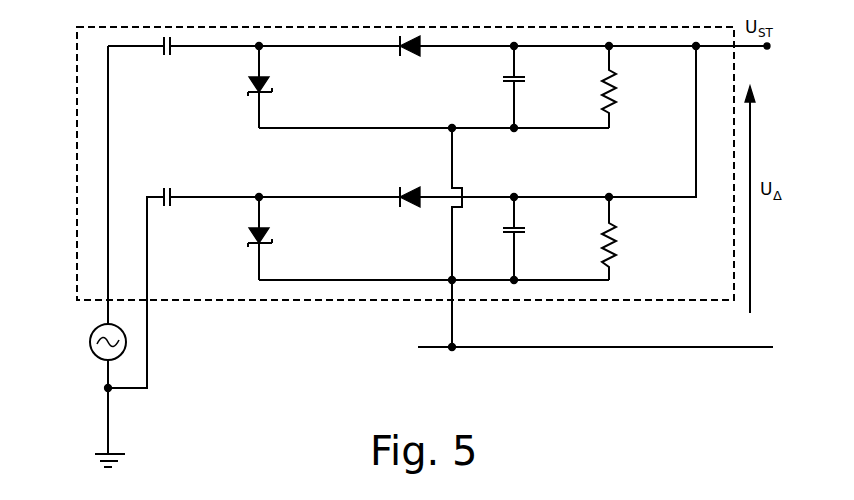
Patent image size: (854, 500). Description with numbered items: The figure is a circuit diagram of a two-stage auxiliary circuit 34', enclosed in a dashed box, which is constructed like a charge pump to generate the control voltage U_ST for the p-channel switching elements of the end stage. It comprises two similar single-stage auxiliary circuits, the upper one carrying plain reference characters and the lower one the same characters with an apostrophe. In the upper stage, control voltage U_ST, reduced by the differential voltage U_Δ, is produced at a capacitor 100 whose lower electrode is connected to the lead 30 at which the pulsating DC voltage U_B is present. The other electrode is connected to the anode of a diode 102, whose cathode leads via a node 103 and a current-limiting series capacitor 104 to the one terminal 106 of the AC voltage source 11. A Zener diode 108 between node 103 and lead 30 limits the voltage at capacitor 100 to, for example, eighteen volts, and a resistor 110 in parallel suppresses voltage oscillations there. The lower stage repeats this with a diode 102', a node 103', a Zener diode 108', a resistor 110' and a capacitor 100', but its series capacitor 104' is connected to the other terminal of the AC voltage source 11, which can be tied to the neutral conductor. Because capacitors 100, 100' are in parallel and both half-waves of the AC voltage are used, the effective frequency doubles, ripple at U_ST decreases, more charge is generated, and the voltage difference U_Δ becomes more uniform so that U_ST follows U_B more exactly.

The two-stage auxiliary circuit 34' is at (381, 163).
The node 103 is at (230, 67).
The node 103' is at (238, 181).
The series capacitor 104 is at (164, 74).
The series capacitor 104' is at (186, 225).
The terminal of AC voltage source 106 is at (108, 172).
The Zener diode 108 is at (224, 239).
The Zener diode 108' is at (295, 238).
The diode 102 is at (418, 74).
The diode 102' is at (420, 227).
The capacitor 100 is at (533, 87).
The capacitor 100' is at (536, 238).
The resistor 110 is at (639, 87).
The resistor 110' is at (654, 238).
The AC voltage source 11 is at (90, 348).
The lead 30 is at (453, 330).